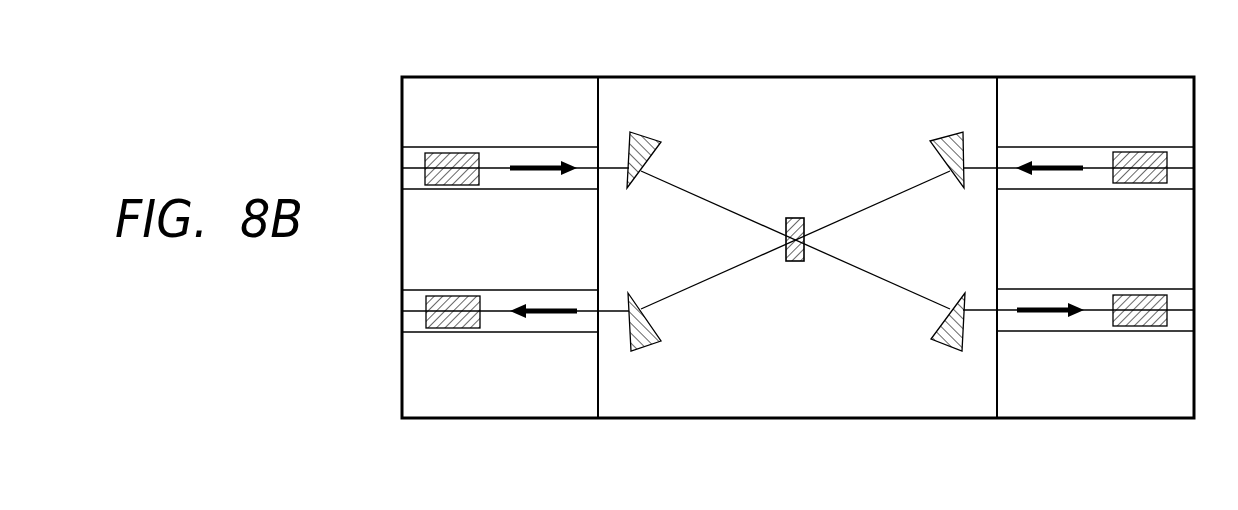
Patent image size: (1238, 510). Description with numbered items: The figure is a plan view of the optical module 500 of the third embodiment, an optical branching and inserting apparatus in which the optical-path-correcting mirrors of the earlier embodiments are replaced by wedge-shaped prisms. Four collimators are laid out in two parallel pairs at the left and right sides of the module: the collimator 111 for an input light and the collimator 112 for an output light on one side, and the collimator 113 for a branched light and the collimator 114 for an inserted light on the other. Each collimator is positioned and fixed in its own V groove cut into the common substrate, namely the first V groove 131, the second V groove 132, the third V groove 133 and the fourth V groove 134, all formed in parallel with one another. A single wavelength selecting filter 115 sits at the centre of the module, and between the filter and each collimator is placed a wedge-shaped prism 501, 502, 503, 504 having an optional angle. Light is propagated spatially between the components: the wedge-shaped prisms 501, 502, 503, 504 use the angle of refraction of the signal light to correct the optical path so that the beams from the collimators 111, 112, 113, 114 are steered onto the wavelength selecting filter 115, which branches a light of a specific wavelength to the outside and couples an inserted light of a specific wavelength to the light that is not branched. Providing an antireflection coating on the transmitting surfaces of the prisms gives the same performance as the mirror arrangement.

The optical module 500 is at (978, 68).
The collimator for an input light 111 is at (459, 152).
The collimator for an output light 112 is at (459, 295).
The collimator for a branched light 113 is at (1151, 294).
The collimator for an inserted light 114 is at (1151, 151).
The wavelength selecting filter 115 is at (800, 217).
The first V groove 131 is at (527, 191).
The second V groove 132 is at (527, 334).
The third V groove 133 is at (1050, 333).
The fourth V groove 134 is at (1050, 191).
The wedge-shaped prism 501 is at (645, 136).
The wedge-shaped prism 502 is at (645, 352).
The wedge-shaped prism 503 is at (949, 351).
The wedge-shaped prism 504 is at (949, 135).